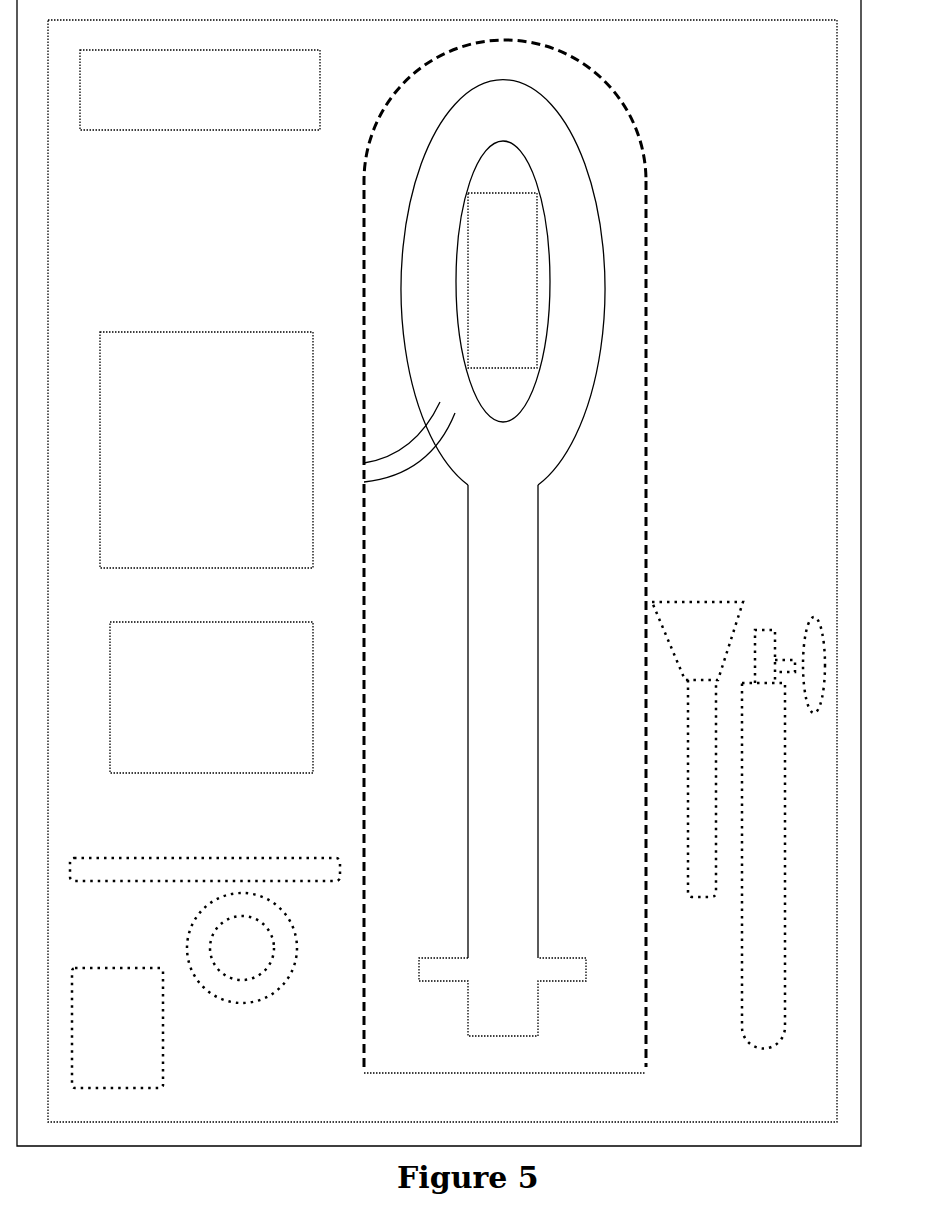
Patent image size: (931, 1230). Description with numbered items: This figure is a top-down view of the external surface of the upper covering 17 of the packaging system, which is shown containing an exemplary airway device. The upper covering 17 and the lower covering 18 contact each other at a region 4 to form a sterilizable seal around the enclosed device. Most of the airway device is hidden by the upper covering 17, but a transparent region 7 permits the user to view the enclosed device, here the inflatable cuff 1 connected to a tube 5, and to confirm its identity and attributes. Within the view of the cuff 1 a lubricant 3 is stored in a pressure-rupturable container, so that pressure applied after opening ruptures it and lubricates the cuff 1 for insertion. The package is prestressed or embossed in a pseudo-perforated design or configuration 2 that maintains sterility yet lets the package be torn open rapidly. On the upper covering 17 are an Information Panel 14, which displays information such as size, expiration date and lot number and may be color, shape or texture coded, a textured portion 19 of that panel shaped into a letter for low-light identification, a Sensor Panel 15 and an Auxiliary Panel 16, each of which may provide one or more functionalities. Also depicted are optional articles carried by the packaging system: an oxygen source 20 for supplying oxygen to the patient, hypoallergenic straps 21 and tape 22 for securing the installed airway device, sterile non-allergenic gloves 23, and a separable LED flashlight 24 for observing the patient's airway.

The inflatable cuff 1 is at (565, 282).
The pseudo-perforated design or configuration 2 is at (704, 624).
The lubricant 3 is at (584, 280).
The seal region 4 is at (442, 571).
The tube 5 is at (519, 978).
The transparent region 7 is at (601, 721).
The Information Panel 14 is at (206, 404).
The Sensor Panel 15 is at (200, 731).
The Auxiliary Panel 16 is at (200, 114).
The upper covering 17 is at (553, 550).
The lower covering 18 is at (372, 624).
The textured portion of the Information Panel 19 is at (180, 448).
The oxygen source 20 is at (759, 861).
The hypoallergenic straps 21 is at (203, 901).
The tape 22 is at (262, 974).
The sterile non-allergenic gloves 23 is at (156, 1034).
The LED flashlight 24 is at (721, 720).